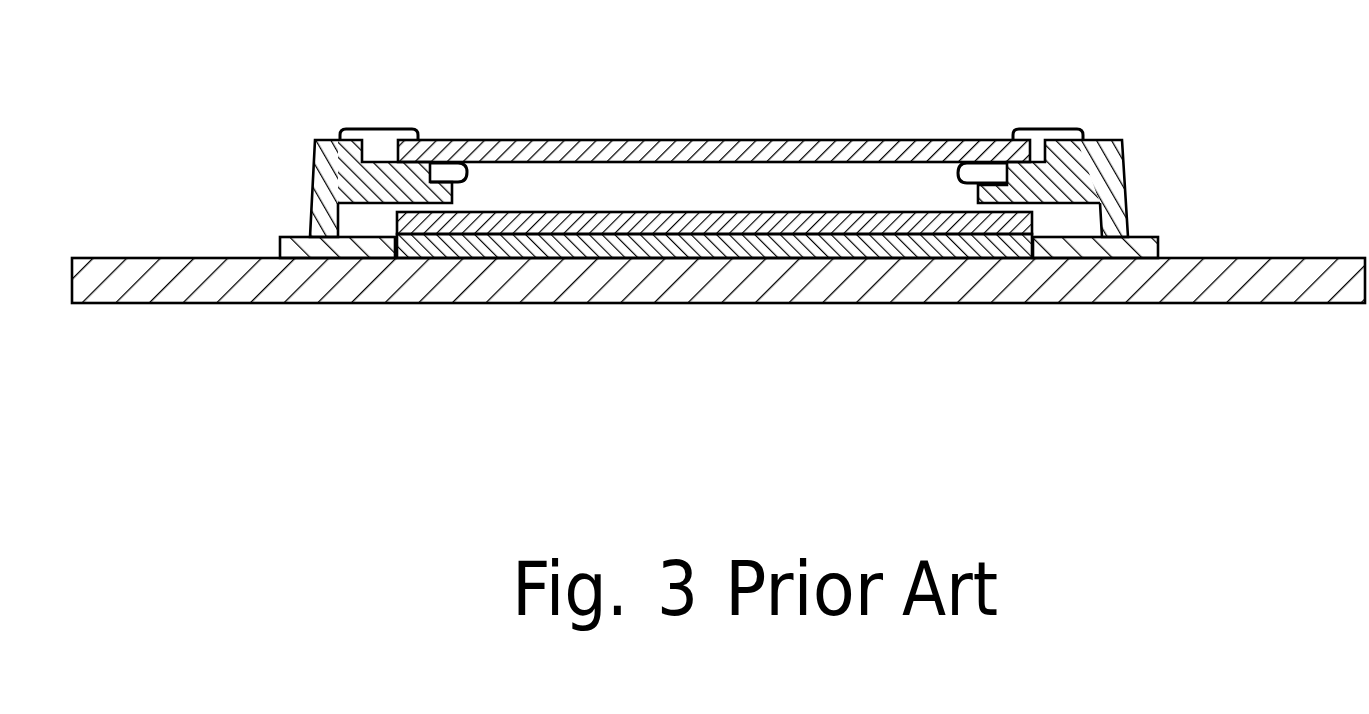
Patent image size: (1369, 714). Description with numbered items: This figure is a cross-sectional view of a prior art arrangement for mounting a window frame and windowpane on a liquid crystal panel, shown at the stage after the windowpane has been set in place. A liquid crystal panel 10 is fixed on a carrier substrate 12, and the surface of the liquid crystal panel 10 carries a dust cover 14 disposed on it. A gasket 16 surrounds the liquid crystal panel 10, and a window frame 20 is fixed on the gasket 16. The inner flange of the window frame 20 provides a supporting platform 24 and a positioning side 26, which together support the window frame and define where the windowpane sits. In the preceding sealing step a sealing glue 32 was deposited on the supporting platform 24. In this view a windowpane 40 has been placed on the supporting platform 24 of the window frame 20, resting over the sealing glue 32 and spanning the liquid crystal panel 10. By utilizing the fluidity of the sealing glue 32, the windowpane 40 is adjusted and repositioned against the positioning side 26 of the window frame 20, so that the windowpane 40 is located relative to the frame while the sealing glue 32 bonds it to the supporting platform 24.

The liquid crystal panel 10 is at (788, 242).
The carrier substrate 12 is at (638, 278).
The dust cover 14 is at (840, 222).
The gasket 16 is at (273, 236).
The window frame 20 is at (1125, 140).
The supporting platform 24 is at (376, 163).
The positioning side 26 is at (1067, 130).
The sealing glue 32 is at (373, 128).
The windowpane 40 is at (713, 140).